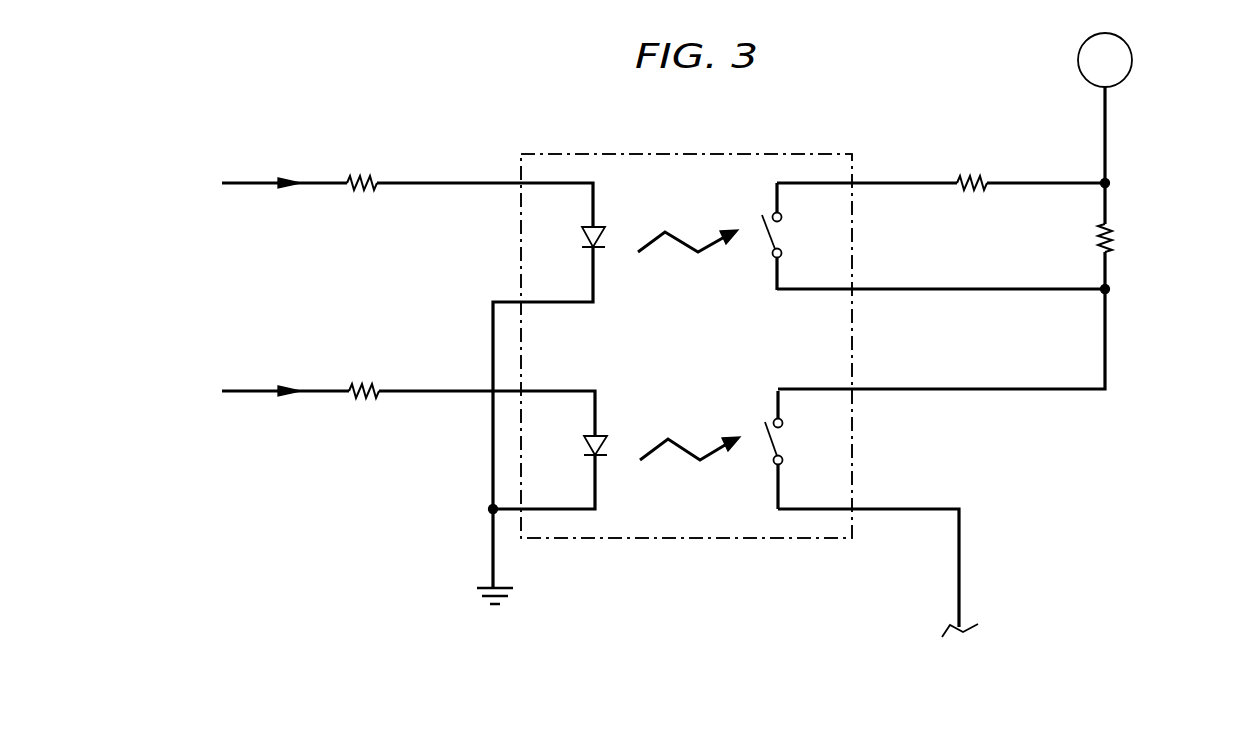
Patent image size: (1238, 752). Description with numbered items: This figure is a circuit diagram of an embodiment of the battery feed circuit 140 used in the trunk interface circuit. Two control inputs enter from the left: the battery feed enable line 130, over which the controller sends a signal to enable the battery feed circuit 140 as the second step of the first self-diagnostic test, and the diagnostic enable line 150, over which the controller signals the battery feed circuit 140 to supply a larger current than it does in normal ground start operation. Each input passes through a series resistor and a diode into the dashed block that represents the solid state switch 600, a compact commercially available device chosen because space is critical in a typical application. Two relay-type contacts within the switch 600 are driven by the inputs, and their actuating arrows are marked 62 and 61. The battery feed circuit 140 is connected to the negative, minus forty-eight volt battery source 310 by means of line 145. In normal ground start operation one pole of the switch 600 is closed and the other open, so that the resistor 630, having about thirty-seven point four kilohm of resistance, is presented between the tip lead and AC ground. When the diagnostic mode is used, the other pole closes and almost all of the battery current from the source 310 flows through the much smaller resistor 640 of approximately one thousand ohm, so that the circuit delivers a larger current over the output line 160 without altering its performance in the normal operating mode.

The battery feed enable line 130 is at (258, 391).
The diagnostic enable line 150 is at (255, 183).
The battery feed circuit 140 is at (571, 121).
The solid state switch 600 is at (647, 540).
The relay coil actuator 61 is at (690, 426).
The relay coil actuator 62 is at (688, 221).
The resistor 640 is at (955, 178).
The resistor 630 is at (1110, 223).
The line 145 is at (1108, 137).
The negative battery source 310 is at (1131, 70).
The line 160 is at (962, 565).